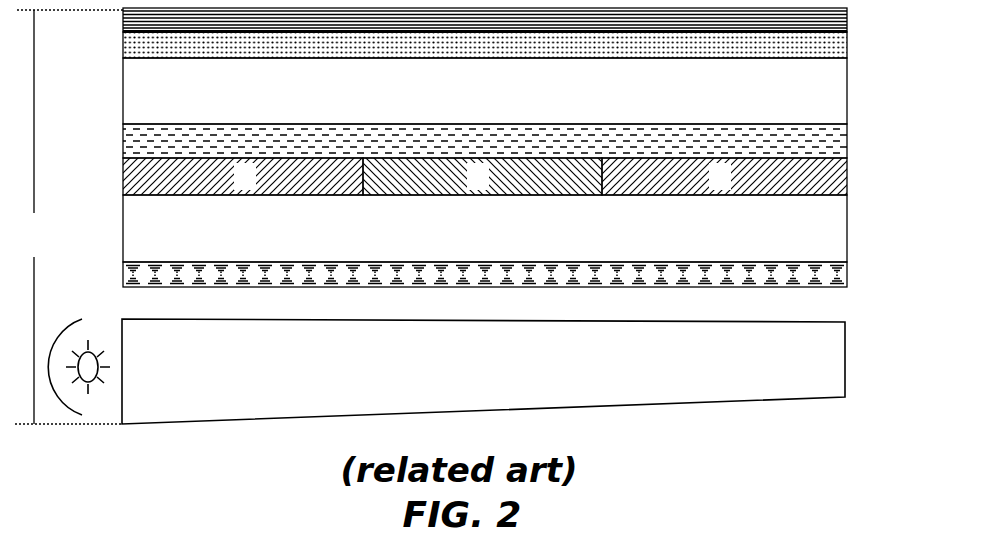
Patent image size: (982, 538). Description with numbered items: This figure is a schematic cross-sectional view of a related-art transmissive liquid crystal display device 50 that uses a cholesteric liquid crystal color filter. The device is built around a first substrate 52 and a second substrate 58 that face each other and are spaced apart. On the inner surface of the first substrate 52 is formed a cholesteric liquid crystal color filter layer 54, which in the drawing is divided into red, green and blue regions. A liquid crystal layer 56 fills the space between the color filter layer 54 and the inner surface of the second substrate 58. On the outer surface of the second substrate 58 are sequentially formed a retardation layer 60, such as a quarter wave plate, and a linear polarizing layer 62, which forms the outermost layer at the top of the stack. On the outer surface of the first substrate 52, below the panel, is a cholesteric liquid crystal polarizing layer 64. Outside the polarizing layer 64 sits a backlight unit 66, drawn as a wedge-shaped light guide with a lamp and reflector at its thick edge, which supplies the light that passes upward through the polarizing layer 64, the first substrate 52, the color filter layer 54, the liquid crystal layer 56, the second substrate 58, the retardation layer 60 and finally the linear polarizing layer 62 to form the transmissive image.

The transmissive liquid crystal display device 50 is at (69, 217).
The first substrate 52 is at (847, 232).
The cholesteric liquid crystal color filter layer 54 is at (847, 181).
The liquid crystal layer 56 is at (847, 144).
The second substrate 58 is at (847, 98).
The retardation layer 60 is at (847, 52).
The linear polarizing layer 62 is at (847, 25).
The cholesteric liquid crystal polarizing layer 64 is at (847, 279).
The backlight unit 66 is at (845, 369).